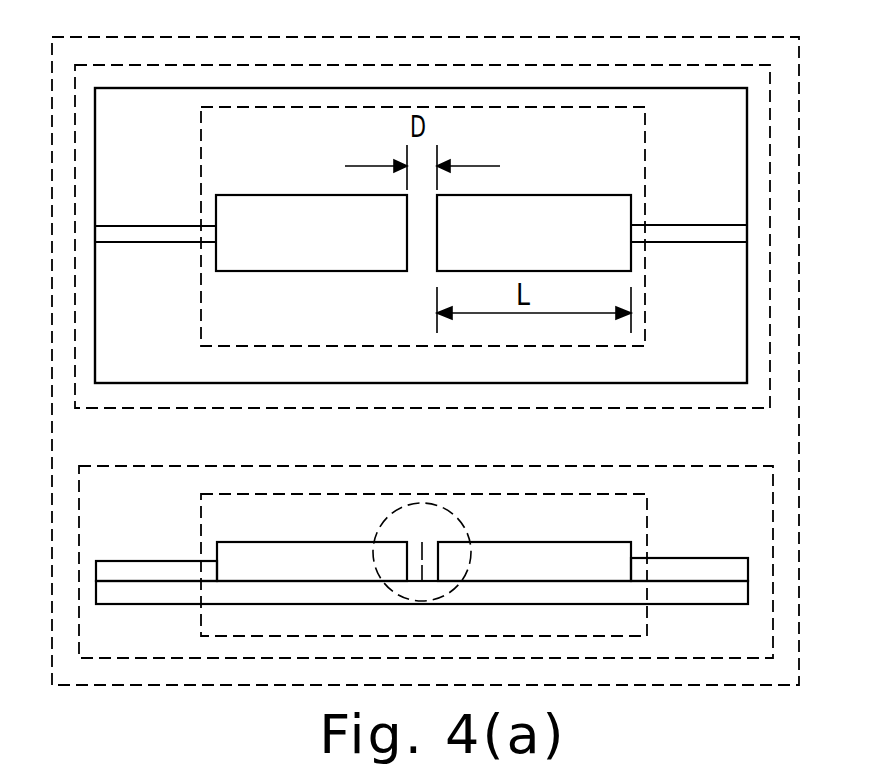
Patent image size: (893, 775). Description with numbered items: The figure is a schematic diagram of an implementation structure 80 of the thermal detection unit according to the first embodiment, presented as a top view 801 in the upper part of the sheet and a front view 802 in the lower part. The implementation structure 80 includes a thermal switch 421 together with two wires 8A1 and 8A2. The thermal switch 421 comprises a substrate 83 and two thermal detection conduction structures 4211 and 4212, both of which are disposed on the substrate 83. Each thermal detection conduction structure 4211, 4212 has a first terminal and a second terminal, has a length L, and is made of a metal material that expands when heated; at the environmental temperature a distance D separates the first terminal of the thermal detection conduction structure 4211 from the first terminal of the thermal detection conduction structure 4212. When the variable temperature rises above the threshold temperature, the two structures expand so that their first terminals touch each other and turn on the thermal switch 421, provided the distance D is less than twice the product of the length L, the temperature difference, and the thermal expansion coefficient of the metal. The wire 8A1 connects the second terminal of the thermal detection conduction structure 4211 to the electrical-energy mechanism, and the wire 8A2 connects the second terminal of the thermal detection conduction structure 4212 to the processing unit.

The implementation structure 80 is at (170, 37).
The top view 801 is at (430, 63).
The front view 802 is at (178, 466).
The substrate 83 is at (323, 138).
The thermal switch 421 is at (645, 160).
The thermal detection conduction structure 4211 is at (527, 207).
The thermal detection conduction structure 4212 is at (322, 212).
The wire 8A1 is at (704, 233).
The wire 8A2 is at (165, 233).